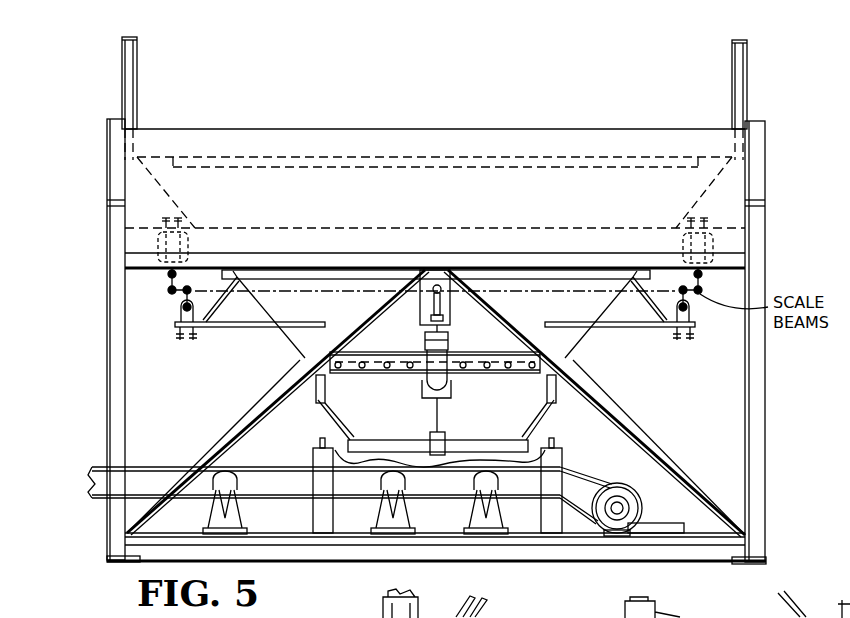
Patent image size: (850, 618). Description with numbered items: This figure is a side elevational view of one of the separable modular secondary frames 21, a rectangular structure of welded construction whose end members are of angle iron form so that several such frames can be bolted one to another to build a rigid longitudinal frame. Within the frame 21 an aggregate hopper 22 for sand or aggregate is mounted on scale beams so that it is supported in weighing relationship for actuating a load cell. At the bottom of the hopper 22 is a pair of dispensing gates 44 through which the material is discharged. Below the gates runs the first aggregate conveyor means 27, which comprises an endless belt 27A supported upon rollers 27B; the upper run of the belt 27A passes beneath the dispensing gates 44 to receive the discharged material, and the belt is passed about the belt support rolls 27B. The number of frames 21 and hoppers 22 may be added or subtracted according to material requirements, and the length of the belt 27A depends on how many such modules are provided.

The modular secondary frame 21 is at (765, 234).
The aggregate hopper 22 is at (405, 341).
The first aggregate conveyor means 27 is at (160, 469).
The endless belt 27A is at (300, 467).
The belt support rolls 27B is at (620, 492).
The dispensing gates 44 is at (520, 447).